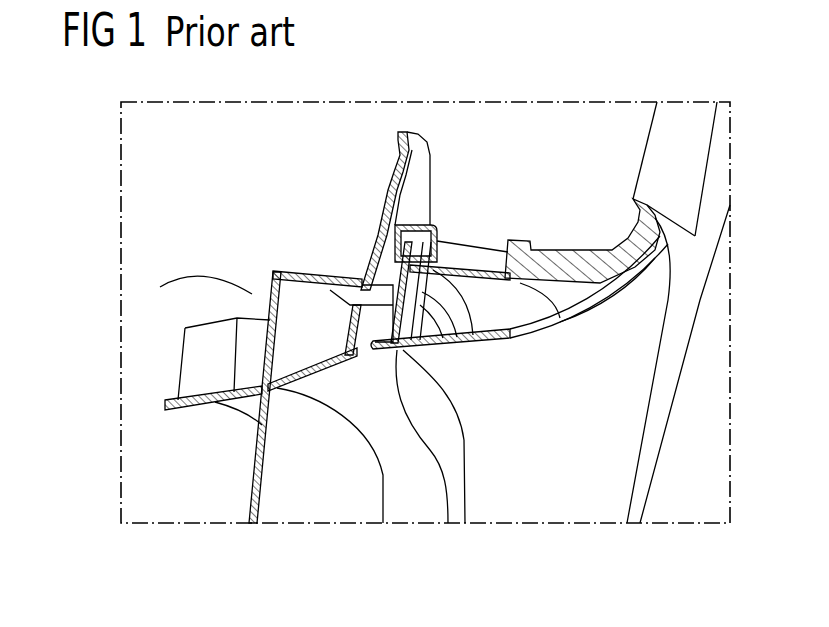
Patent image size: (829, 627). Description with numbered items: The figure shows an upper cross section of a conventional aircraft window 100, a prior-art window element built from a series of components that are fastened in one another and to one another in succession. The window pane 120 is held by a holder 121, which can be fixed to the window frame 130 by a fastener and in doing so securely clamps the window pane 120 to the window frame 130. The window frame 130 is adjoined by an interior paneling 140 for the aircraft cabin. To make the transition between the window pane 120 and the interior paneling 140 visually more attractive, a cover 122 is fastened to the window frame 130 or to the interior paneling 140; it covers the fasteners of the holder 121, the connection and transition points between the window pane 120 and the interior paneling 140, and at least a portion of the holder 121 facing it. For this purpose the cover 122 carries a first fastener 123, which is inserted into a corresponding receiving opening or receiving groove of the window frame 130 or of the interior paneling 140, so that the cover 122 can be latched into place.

The aircraft window 100 is at (483, 170).
The interior paneling 140 is at (552, 248).
The window frame 130 is at (262, 292).
The window pane 120 is at (297, 512).
The holder 121 is at (397, 512).
The first fastener 123 is at (450, 510).
The cover 122 is at (572, 512).